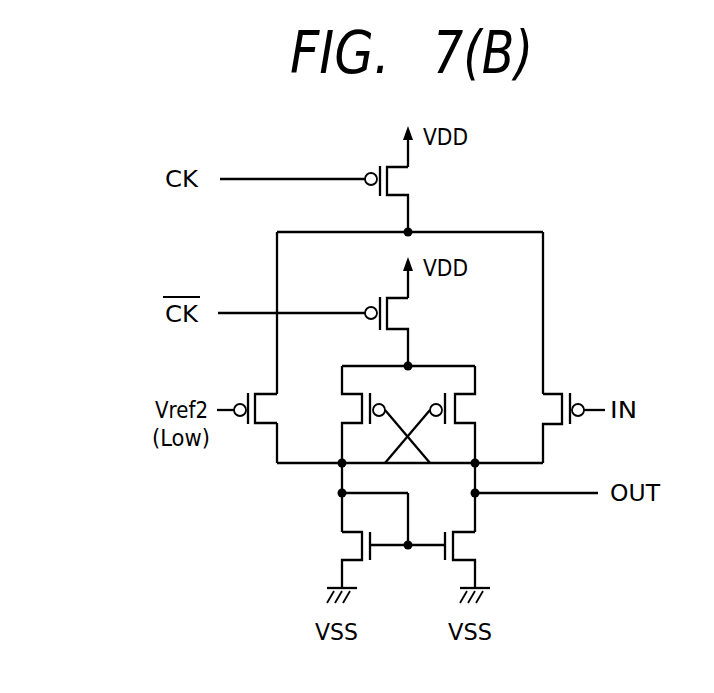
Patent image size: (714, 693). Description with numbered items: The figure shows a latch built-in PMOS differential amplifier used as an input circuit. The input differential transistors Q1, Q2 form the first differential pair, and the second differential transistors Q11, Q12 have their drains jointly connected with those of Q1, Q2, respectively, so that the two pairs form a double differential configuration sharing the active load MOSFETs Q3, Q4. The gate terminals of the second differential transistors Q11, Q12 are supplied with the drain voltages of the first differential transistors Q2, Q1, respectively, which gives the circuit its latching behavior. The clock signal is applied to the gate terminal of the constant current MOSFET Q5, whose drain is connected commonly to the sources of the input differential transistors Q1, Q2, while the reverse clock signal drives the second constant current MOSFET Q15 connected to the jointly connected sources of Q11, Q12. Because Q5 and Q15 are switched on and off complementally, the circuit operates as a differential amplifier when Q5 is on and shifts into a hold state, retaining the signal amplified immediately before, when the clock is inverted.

The constant current MOSFET Q5 is at (405, 179).
The second constant current MOSFET Q15 is at (411, 311).
The input differential transistor Q1 is at (255, 428).
The input differential transistor Q2 is at (563, 428).
The second differential transistor Q11 is at (341, 414).
The second differential transistor Q12 is at (476, 414).
The active load MOSFET Q3 is at (339, 567).
The active load MOSFET Q4 is at (476, 567).